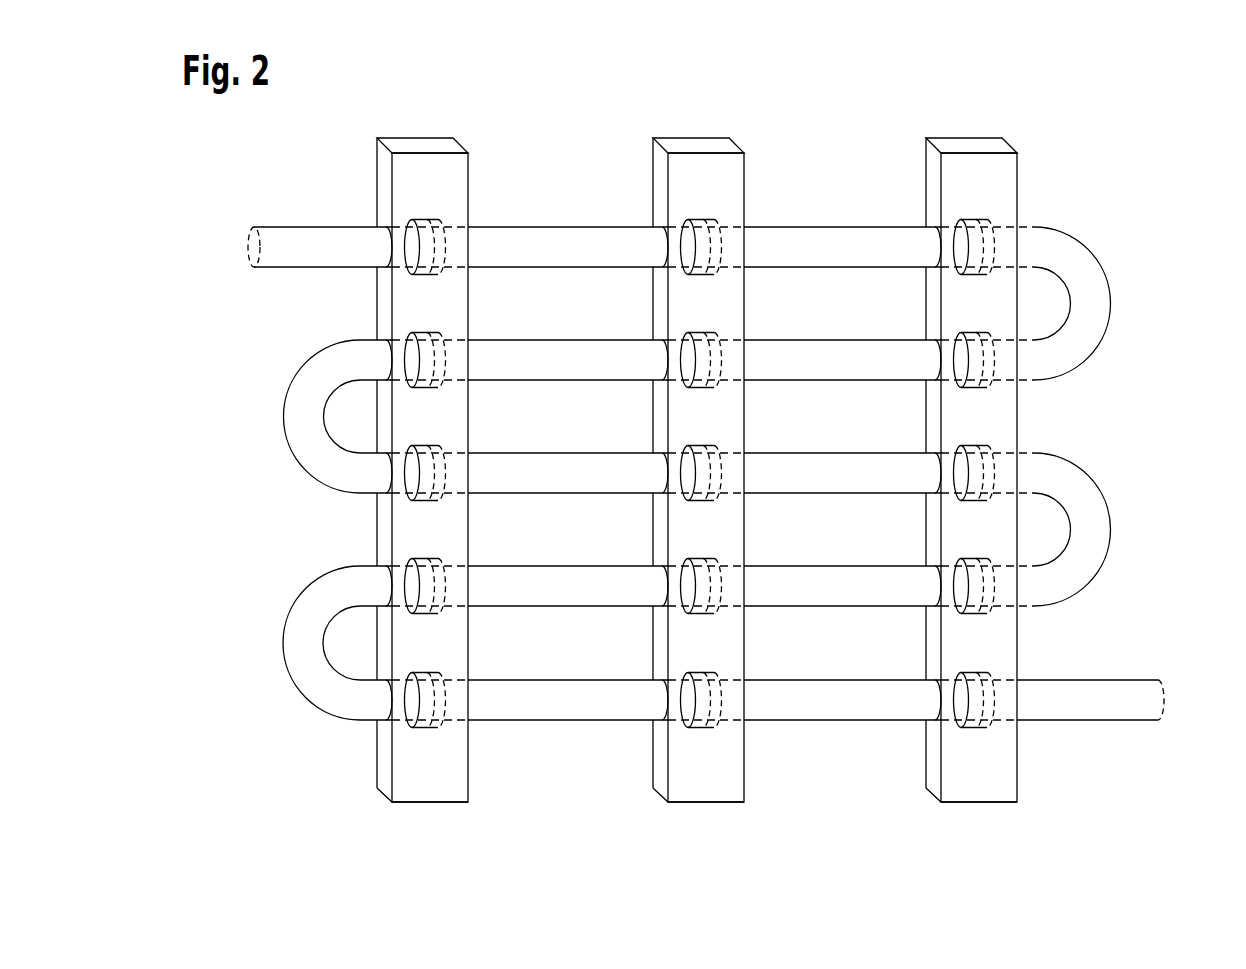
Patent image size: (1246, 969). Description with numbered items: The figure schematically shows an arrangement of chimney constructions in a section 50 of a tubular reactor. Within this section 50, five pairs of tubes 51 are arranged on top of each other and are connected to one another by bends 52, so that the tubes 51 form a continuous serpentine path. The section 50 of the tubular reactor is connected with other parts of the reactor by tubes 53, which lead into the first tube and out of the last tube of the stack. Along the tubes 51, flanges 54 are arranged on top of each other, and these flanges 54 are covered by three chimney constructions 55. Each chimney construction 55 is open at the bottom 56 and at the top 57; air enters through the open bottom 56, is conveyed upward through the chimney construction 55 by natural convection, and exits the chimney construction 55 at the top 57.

The section of tubular reactor 50 is at (1095, 142).
The tubes 51 is at (578, 227).
The bends 52 is at (298, 418).
The tubes 53 is at (300, 227).
The flanges 54 is at (408, 336).
The chimney constructions 55 is at (468, 190).
The bottom 56 is at (420, 802).
The top 57 is at (420, 148).